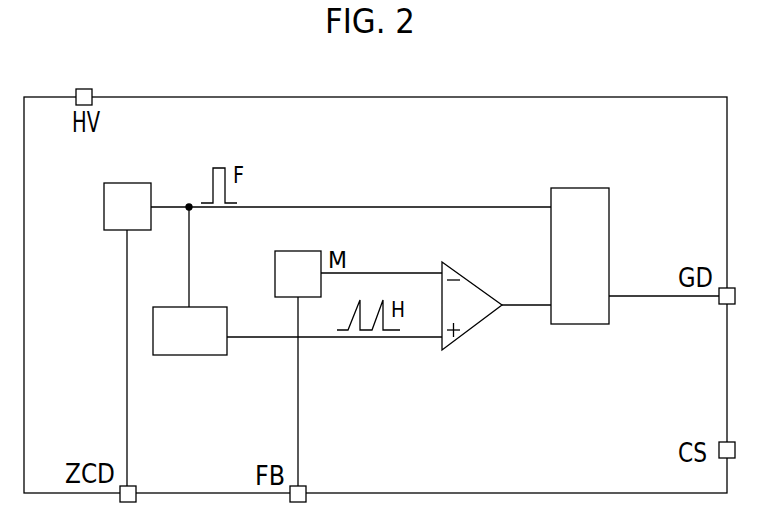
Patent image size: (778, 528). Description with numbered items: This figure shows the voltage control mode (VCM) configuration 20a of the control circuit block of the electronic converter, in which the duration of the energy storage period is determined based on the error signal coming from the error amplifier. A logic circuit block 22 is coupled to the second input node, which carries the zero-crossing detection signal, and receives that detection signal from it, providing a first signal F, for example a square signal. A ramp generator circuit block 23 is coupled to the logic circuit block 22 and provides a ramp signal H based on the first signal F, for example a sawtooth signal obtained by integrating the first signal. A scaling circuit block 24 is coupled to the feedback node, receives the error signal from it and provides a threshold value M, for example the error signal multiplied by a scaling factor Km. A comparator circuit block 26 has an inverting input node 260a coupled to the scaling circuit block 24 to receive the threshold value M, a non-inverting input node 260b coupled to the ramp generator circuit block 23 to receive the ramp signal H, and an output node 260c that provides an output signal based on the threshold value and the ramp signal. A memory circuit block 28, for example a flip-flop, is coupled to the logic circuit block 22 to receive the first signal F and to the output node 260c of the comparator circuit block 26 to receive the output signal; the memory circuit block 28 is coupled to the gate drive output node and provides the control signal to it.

The voltage control mode configuration 20a is at (669, 118).
The logic circuit block 22 is at (128, 193).
The ramp generator circuit block 23 is at (193, 345).
The scaling circuit block 24 is at (306, 251).
The comparator circuit block 26 is at (487, 318).
The inverting input node 260a is at (393, 272).
The non-inverting input node 260b is at (415, 340).
The output node 260c is at (525, 303).
The memory circuit block 28 is at (593, 192).